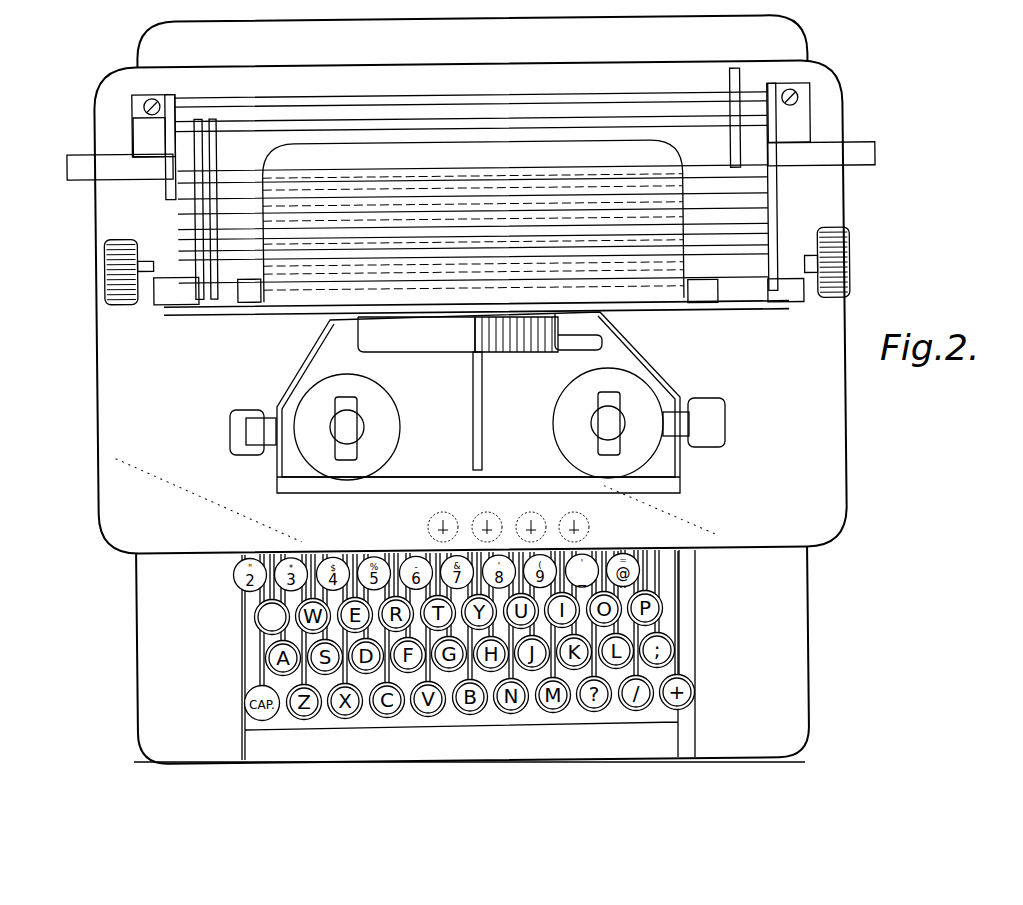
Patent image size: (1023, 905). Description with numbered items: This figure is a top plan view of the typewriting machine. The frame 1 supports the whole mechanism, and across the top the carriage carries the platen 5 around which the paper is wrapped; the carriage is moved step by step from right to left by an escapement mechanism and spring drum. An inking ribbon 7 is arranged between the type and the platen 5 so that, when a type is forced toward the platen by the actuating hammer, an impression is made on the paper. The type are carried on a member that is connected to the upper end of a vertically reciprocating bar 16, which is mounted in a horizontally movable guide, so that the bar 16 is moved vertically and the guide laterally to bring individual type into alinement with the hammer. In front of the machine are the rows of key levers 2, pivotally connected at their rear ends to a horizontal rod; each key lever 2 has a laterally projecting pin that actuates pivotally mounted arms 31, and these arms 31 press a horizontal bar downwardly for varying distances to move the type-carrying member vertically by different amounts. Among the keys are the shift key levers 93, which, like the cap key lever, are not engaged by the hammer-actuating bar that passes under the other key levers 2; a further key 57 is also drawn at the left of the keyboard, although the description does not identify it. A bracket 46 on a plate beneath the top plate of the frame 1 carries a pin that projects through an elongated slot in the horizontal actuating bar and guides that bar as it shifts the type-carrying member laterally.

The frame 1 is at (168, 192).
The platen 5 is at (413, 300).
The inking ribbon 7 is at (443, 317).
The pivotally mounted arms 31 is at (527, 352).
The vertically reciprocating bar 16 is at (584, 345).
The bracket 46 is at (150, 421).
The key 57 is at (256, 635).
The shift key levers 93 is at (240, 675).
The key levers 2 is at (655, 586).